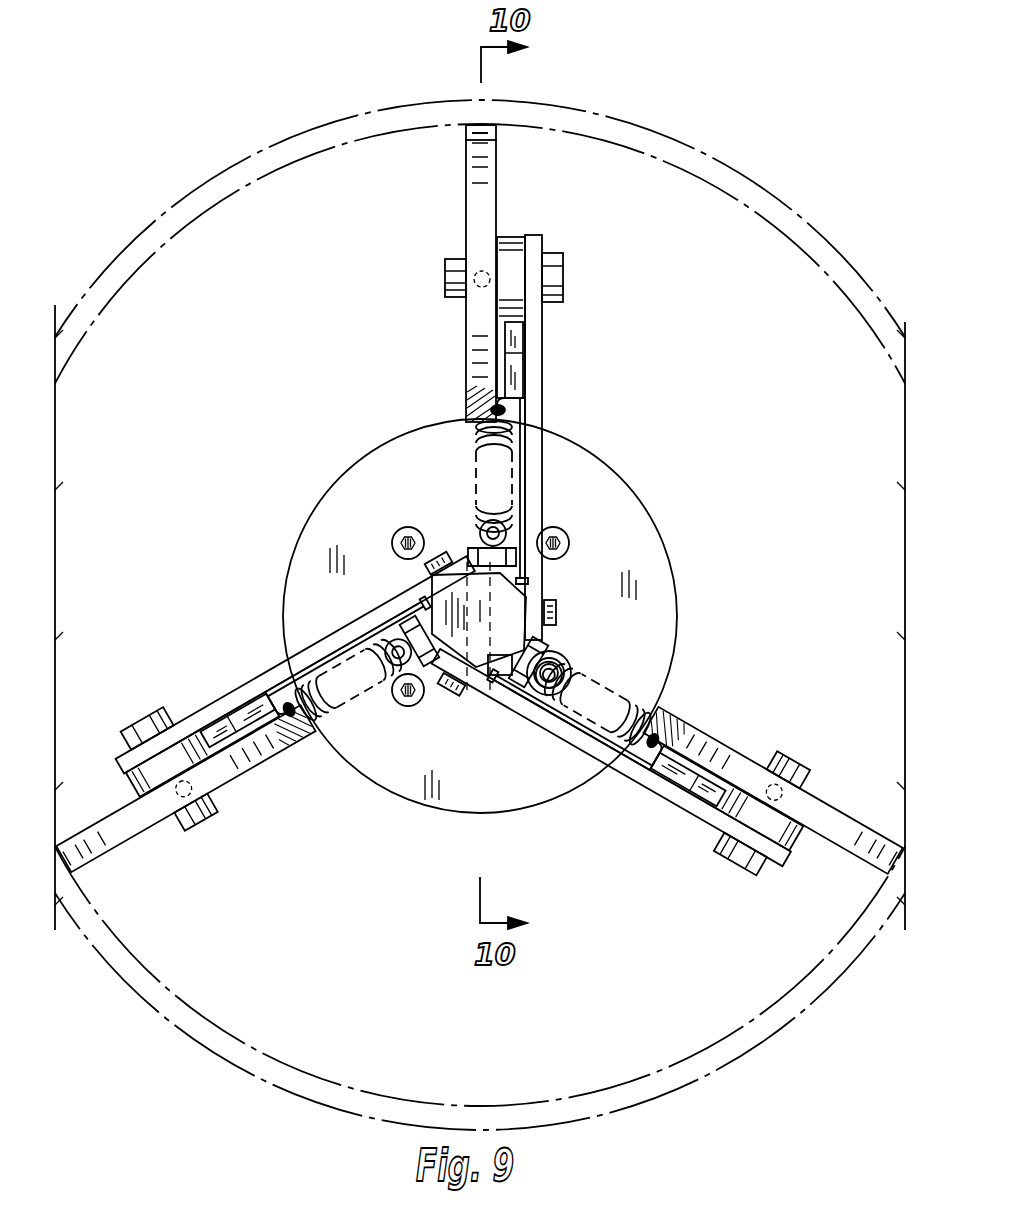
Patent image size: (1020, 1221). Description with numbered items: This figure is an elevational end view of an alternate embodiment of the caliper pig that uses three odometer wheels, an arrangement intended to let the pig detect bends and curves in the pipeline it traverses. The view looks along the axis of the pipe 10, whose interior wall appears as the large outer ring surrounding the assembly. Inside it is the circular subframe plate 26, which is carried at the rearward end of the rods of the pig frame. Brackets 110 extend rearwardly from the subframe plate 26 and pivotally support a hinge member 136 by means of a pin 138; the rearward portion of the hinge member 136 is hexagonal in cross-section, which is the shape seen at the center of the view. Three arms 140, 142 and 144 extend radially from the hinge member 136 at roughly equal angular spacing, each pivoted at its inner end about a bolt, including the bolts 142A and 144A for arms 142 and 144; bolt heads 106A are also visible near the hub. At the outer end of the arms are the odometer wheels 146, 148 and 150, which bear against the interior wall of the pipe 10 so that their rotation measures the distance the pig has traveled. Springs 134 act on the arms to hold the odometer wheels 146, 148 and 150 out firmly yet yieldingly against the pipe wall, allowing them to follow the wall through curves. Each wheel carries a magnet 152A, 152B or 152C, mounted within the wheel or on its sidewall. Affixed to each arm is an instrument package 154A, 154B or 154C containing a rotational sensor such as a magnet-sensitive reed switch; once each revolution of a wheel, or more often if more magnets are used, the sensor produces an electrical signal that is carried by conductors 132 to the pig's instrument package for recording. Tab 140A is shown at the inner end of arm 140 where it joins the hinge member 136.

The pipe 10 is at (742, 174).
The subframe plate 26 is at (668, 582).
The bolt 106A is at (572, 540).
The brackets 110 is at (513, 558).
The conductors 132 is at (522, 419).
The springs 134 is at (477, 449).
The hinge member 136 is at (505, 600).
The pin 138 is at (500, 700).
The arm 140 is at (656, 792).
The tab 140A is at (442, 689).
The arm 142 is at (225, 693).
The bolt 142A is at (449, 553).
The arm 144 is at (535, 375).
The bolt 144A is at (556, 620).
The odometer wheel 146 is at (737, 748).
The odometer wheel 148 is at (145, 818).
The odometer wheel 150 is at (488, 200).
The magnet 152A is at (478, 276).
The magnet 152B is at (775, 786).
The magnet 152C is at (200, 786).
The instrument package 154A is at (518, 378).
The instrument package 154B is at (700, 800).
The instrument package 154C is at (258, 702).